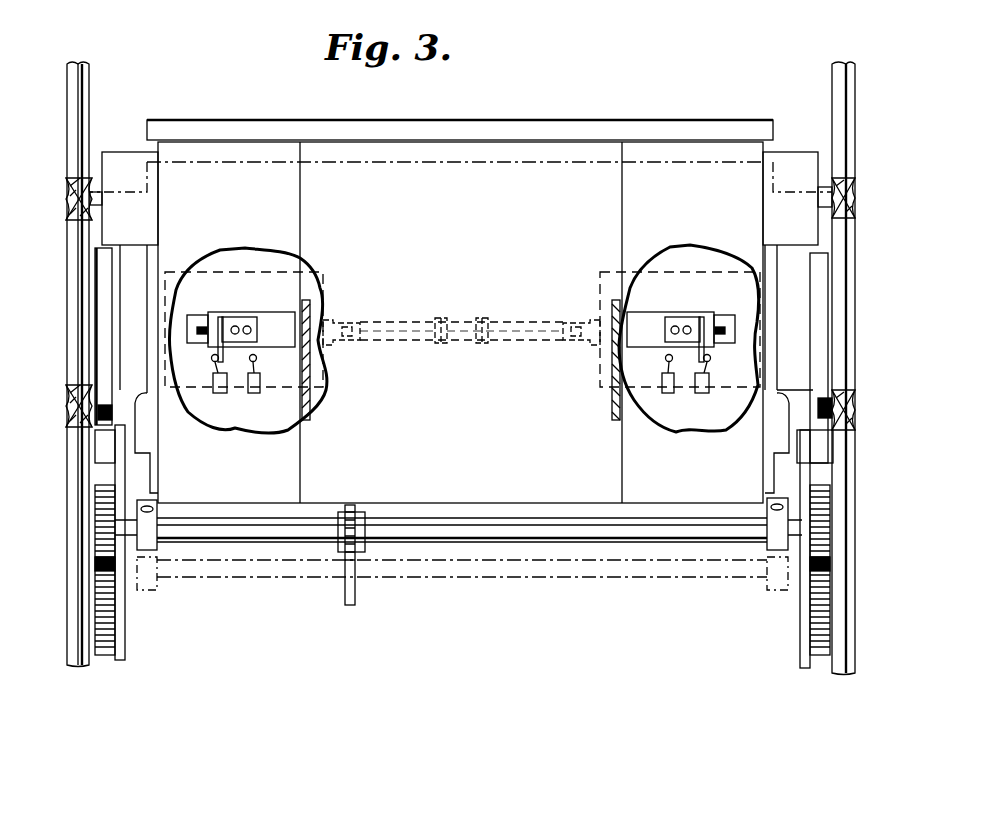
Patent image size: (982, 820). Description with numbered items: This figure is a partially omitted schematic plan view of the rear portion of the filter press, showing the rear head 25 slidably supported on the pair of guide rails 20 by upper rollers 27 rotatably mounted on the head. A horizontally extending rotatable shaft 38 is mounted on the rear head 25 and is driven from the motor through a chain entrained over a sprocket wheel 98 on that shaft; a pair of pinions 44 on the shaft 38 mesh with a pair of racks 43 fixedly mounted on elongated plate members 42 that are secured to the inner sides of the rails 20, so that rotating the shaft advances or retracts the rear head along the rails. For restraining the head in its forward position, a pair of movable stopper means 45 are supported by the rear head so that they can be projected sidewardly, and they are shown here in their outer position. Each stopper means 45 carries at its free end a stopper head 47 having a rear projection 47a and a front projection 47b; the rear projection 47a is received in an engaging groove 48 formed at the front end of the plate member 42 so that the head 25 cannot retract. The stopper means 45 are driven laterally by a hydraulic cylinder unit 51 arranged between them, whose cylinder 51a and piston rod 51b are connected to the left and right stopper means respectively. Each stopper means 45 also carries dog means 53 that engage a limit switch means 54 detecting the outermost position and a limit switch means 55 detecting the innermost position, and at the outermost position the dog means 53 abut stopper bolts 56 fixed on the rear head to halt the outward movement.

The guide rails 20 is at (84, 122).
The rear head 25 is at (699, 119).
The upper rollers 27 is at (67, 185).
The rotatable shaft 38 is at (513, 530).
The elongated plate members 42 is at (120, 610).
The racks 43 is at (107, 640).
The pinions 44 is at (118, 500).
The movable stopper means 45 is at (169, 287).
The stopper heads 47 is at (100, 330).
The rear projections 47a is at (110, 415).
The front projections 47b is at (120, 246).
The engaging grooves 48 is at (102, 454).
The hydraulic cylinder unit 51 is at (463, 325).
The cylinder 51a is at (504, 343).
The piston rod 51b is at (396, 322).
The dog means 53 is at (258, 318).
The limit switch means 54 is at (235, 395).
The limit switch means 55 is at (262, 390).
The stopper bolts 56 is at (222, 318).
The sprocket wheel 98 is at (356, 560).